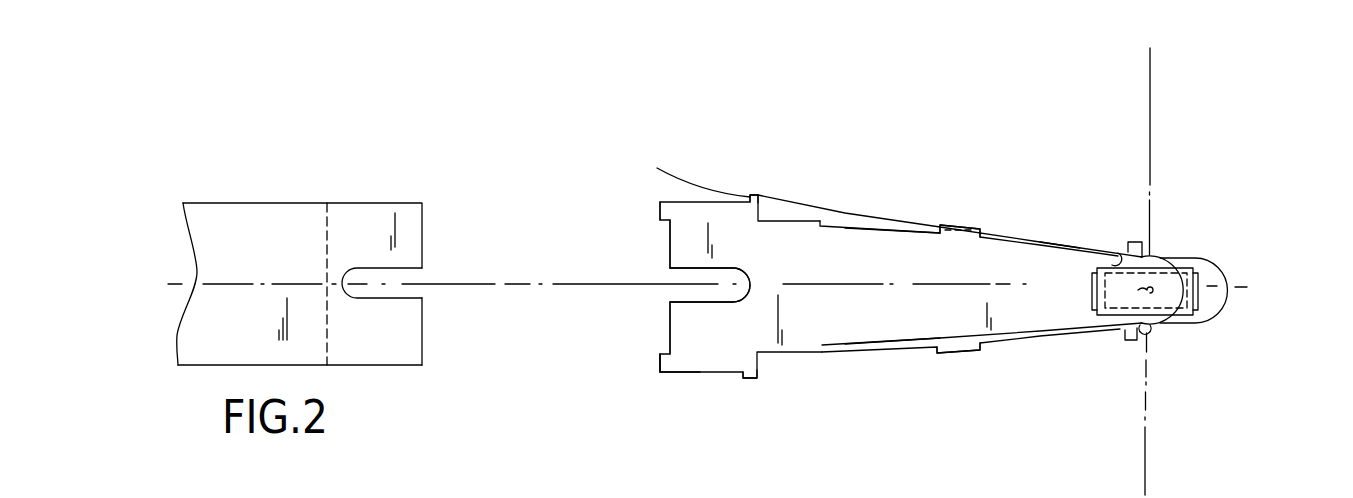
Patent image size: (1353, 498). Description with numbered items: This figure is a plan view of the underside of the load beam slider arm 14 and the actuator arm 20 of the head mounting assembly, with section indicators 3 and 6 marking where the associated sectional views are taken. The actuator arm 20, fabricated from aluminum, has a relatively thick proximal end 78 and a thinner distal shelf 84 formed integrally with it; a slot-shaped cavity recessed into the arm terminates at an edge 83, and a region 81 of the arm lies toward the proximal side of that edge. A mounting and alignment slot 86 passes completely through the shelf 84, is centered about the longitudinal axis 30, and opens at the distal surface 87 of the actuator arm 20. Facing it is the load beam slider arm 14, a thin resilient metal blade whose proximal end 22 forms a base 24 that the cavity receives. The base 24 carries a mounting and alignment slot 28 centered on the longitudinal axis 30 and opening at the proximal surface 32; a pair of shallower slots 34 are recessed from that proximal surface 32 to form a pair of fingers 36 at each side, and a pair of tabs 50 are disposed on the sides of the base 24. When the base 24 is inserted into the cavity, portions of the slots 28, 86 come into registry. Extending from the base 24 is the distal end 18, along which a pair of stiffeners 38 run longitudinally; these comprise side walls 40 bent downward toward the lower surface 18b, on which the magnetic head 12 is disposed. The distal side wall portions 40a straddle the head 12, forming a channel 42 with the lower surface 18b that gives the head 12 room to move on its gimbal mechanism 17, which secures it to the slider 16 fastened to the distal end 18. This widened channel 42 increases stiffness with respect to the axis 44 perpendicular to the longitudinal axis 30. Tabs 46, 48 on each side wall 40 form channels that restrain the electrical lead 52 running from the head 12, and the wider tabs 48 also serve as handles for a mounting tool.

The section line 3- 3 is at (129, 91).
The section line 6- 6 is at (122, 282).
The magnetic head 12 is at (1097, 315).
The load beam slider arm 14 is at (1034, 180).
The slider 16 is at (1097, 288).
The gimbal mechanism 17 is at (1130, 292).
The distal end 18 is at (1140, 218).
The lower surface 18b is at (982, 274).
The actuator arm 20 is at (303, 152).
The proximal end 22 is at (729, 165).
The base 24 is at (697, 372).
The mounting and alignment slot 28 is at (688, 285).
The longitudinal axis 30 is at (505, 283).
The proximal surface 32 is at (650, 372).
The shallower slots 34 is at (670, 246).
The fingers 36 is at (660, 206).
The stiffeners 38 is at (906, 250).
The side walls 40 is at (875, 234).
The distal side wall portions 40a is at (1120, 252).
The channel 42 is at (1080, 267).
The axis 44 is at (1150, 87).
The tabs 46 is at (1138, 245).
The tabs 48 is at (960, 230).
The tabs 50 is at (757, 192).
The electrical lead 52 is at (1225, 302).
The proximal end 78 is at (208, 203).
The plug body portion 81 is at (228, 314).
The edge 83 is at (325, 323).
The shelf 84 is at (380, 357).
The mounting and alignment slot 86 is at (415, 277).
The distal surface 87 is at (422, 340).